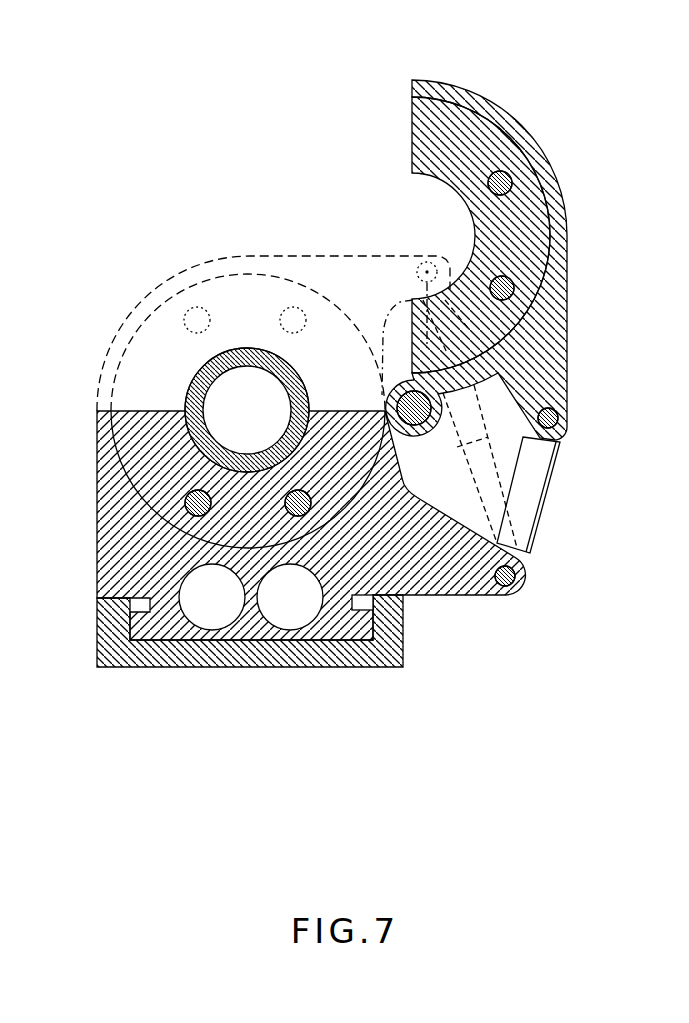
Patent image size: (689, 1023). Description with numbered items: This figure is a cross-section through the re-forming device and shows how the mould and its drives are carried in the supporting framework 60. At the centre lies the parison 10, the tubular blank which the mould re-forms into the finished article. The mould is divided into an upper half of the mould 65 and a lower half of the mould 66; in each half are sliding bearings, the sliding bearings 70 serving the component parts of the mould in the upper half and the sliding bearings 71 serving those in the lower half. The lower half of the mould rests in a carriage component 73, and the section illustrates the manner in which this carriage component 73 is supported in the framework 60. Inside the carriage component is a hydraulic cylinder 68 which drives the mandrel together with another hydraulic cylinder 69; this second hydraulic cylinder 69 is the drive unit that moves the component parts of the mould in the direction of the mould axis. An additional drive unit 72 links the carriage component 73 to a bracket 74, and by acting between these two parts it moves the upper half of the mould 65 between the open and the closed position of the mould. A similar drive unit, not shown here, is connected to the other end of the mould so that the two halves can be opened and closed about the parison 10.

The parison 10 is at (208, 373).
The framework 60 is at (97, 665).
The upper half of the mould 65 is at (472, 145).
The lower half of the mould 66 is at (140, 429).
The hydraulic cylinder 68 is at (207, 620).
The hydraulic cylinder 69 is at (297, 610).
The sliding bearings 70 is at (508, 277).
The sliding bearings 71 is at (288, 509).
The additional drive unit 72 is at (533, 495).
The carriage component 73 is at (150, 582).
The bracket 74 is at (440, 87).